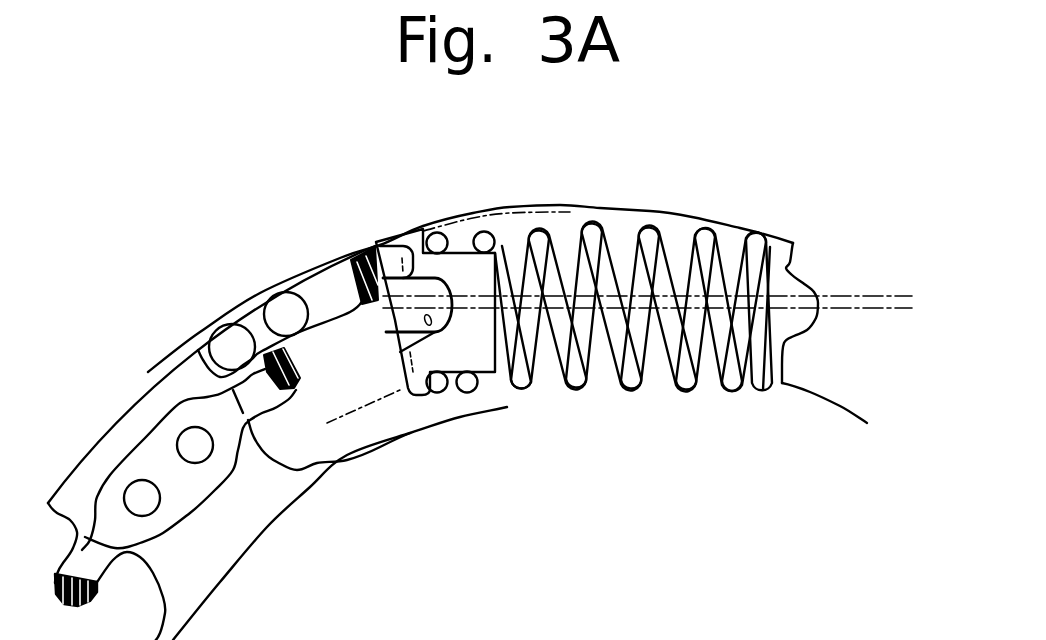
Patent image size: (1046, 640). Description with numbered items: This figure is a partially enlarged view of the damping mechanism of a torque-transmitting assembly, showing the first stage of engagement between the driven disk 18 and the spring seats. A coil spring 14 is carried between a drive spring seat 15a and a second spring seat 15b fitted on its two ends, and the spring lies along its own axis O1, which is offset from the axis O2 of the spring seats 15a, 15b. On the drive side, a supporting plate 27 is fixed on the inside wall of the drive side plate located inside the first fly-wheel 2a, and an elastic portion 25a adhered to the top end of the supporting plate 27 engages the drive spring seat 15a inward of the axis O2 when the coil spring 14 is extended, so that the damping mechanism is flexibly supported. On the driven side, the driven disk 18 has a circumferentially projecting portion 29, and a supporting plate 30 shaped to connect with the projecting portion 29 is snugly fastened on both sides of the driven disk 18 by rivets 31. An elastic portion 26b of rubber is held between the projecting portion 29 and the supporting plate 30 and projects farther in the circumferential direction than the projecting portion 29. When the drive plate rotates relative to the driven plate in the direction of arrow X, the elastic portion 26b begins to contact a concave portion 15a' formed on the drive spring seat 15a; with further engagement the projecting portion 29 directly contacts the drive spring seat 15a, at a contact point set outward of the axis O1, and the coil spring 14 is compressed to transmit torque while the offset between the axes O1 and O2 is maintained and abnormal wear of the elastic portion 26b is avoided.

The first fly-wheel 2a is at (692, 198).
The spring seat 15b is at (780, 253).
The coil spring 14 is at (483, 232).
The drive spring seat 15a is at (431, 272).
The concave portion 15a' is at (445, 387).
The elastic portion 25a is at (362, 257).
The supporting plate 27 is at (317, 287).
The projecting portion 29 is at (213, 327).
The elastic portion 26b is at (260, 362).
The driven disk 18 is at (120, 435).
The supporting plate 30 is at (110, 500).
The rivets 31 is at (157, 510).
The axis of the coil spring O1 is at (847, 307).
The axis of the spring seats O2 is at (837, 293).
The direction of relative rotation X is at (187, 190).